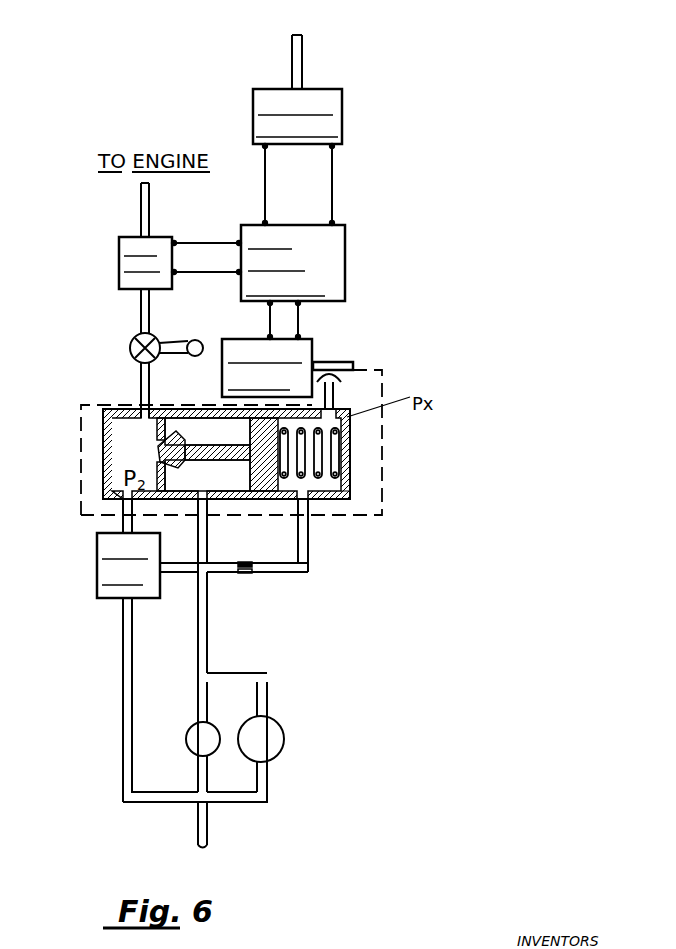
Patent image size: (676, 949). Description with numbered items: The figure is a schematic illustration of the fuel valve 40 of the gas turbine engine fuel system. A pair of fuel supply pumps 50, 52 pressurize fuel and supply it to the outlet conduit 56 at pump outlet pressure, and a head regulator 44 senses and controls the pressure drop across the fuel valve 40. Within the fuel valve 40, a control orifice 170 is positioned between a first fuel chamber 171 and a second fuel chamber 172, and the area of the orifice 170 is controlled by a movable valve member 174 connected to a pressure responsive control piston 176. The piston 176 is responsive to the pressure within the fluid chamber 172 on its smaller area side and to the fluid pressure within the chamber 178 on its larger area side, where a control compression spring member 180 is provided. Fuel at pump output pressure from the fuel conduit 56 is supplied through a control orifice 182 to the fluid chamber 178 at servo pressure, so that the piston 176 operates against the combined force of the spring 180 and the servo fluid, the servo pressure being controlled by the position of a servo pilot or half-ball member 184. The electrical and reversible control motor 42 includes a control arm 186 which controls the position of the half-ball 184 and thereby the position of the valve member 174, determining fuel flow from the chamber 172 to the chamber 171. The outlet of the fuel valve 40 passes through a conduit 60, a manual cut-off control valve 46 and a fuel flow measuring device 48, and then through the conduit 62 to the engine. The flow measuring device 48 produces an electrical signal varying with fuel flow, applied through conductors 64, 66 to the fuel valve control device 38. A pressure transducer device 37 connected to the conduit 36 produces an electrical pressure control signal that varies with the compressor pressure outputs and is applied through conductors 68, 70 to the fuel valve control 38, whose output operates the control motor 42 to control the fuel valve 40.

The conduit 36 is at (302, 55).
The pressure transducer device 37 is at (320, 112).
The fuel valve control device 38 is at (340, 262).
The fuel valve 40 is at (435, 441).
The control motor 42 is at (300, 330).
The head regulator 44 is at (100, 590).
The manual cut-off control valve 46 is at (134, 338).
The fuel flow measuring device 48 is at (118, 248).
The fuel supply pump 50 is at (192, 740).
The fuel supply pump 52 is at (272, 733).
The outlet conduit 56 is at (208, 632).
The conduit 60 is at (141, 378).
The conduit 62 is at (149, 216).
The conductor 64 is at (185, 243).
The conductor 66 is at (185, 280).
The conductor 68 is at (265, 172).
The conductor 70 is at (332, 192).
The control orifice 170 is at (158, 448).
The first fuel chamber 171 is at (108, 475).
The second fuel chamber 172 is at (221, 500).
The movable valve member 174 is at (164, 436).
The pressure responsive control piston 176 is at (262, 465).
The fluid chamber 178 is at (328, 455).
The control compression spring member 180 is at (343, 488).
The control orifice 182 is at (252, 573).
The half-ball member 184 is at (333, 378).
The control arm 186 is at (343, 365).